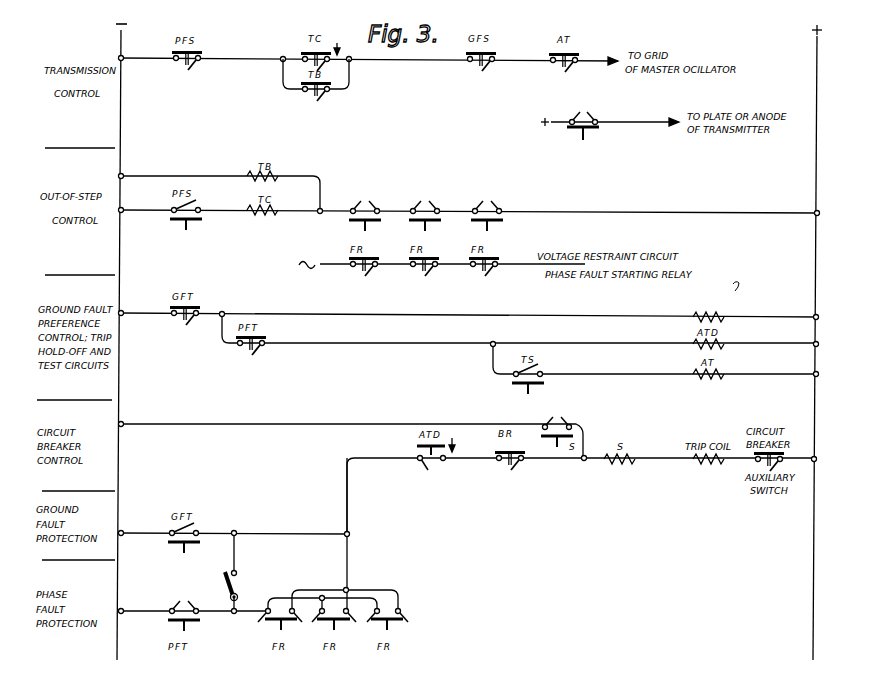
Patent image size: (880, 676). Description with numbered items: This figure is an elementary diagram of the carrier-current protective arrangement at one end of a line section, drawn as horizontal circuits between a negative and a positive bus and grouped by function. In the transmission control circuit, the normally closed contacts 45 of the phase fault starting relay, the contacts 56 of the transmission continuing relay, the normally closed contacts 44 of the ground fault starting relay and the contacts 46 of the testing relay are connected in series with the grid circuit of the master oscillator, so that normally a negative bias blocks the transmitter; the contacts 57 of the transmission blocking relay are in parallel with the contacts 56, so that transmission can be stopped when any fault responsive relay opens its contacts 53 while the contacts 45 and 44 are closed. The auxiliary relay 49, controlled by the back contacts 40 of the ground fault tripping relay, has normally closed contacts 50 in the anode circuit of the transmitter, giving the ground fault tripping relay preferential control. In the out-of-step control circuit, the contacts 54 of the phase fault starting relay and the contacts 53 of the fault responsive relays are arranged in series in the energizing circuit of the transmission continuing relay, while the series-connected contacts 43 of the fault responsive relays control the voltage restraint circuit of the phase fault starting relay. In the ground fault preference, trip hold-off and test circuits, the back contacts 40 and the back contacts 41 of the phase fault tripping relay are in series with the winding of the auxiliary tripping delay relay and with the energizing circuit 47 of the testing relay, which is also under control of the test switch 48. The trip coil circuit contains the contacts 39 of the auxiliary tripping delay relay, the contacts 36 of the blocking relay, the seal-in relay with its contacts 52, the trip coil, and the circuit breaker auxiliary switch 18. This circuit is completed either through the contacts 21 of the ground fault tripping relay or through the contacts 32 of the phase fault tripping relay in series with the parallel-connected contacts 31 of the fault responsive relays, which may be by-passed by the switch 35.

The auxiliary switch 18 is at (758, 462).
The contacts of ground fault tripping relay 21 is at (196, 526).
The contacts of fault responsive relays 31 is at (333, 611).
The contacts of phase fault tripping relay 32 is at (184, 610).
The switch 35 is at (225, 588).
The contacts of blocking relay 36 is at (499, 461).
The contacts of auxiliary tripping delay relay 39 is at (428, 465).
The back contacts of ground fault tripping relay 40 is at (174, 316).
The back contacts of phase fault tripping relay 41 is at (240, 346).
The contacts of fault responsive relays 43 is at (353, 267).
The contacts of ground fault starting relay 44 is at (470, 62).
The contacts of phase fault starting relay 45 is at (176, 61).
The contacts of testing relay 46 is at (553, 63).
The energizing circuit of testing relay 47 is at (710, 312).
The test switch 48 is at (540, 367).
The auxiliary relay 49 is at (581, 137).
The contacts of auxiliary relay 50 is at (584, 111).
The contacts of seal-in relay 52 is at (557, 425).
The contacts of fault responsive relays 53 is at (426, 208).
The contacts of phase fault starting relay 54 is at (198, 203).
The contacts of transmission continuing relay 56 is at (305, 62).
The contacts of transmission blocking relay 57 is at (305, 92).